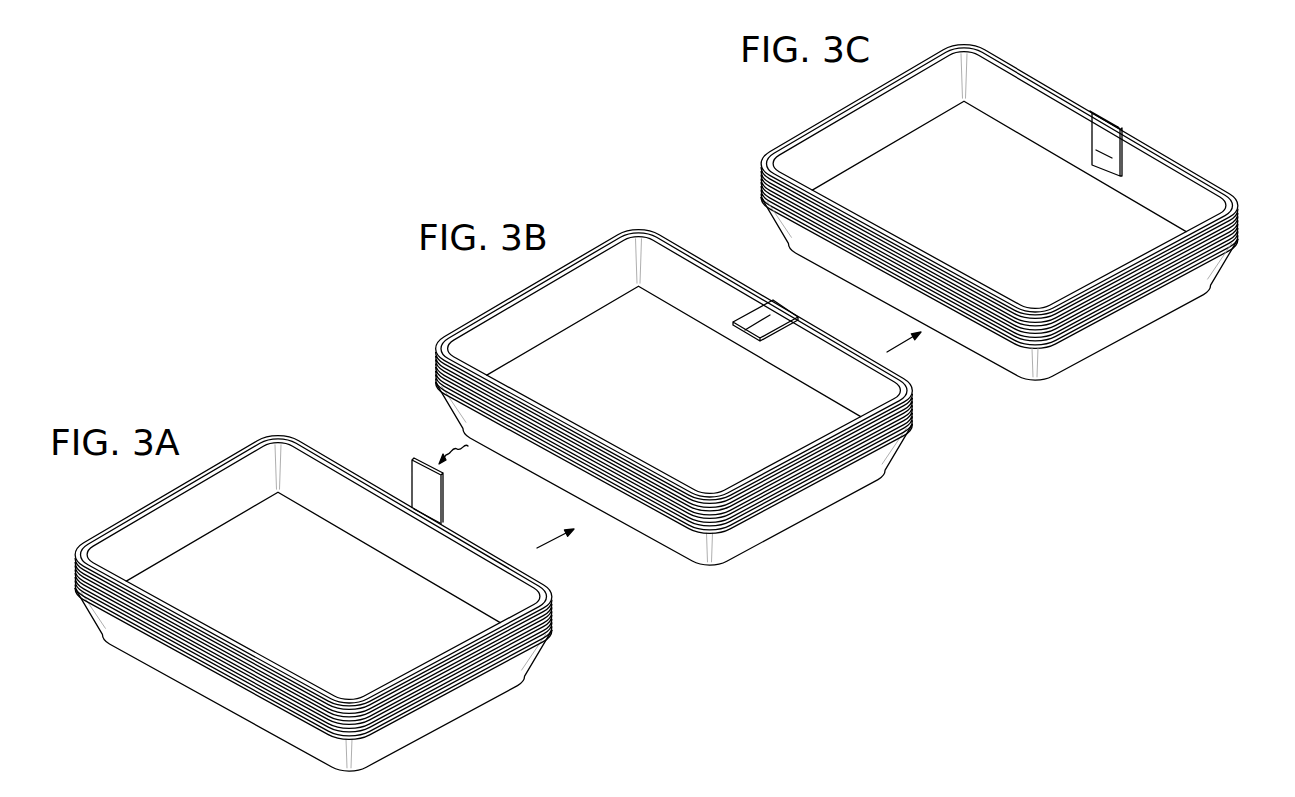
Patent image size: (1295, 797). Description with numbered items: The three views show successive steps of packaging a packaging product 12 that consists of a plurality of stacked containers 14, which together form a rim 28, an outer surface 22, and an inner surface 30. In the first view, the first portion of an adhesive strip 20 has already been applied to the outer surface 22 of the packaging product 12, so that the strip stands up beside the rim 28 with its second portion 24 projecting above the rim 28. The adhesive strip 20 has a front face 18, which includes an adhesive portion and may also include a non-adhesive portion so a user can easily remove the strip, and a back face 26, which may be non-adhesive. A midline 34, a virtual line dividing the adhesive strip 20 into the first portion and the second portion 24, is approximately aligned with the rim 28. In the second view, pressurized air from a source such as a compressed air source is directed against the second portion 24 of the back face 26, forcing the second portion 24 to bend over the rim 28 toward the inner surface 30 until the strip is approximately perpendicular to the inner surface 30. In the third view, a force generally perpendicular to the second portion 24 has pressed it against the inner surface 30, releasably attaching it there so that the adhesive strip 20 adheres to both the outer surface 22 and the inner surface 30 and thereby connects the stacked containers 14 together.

In FIG. 3A, the packaging product 12 is at (553, 577).
In FIG. 3B, the packaging product 12 is at (913, 371).
In FIG. 3C, the packaging product 12 is at (1239, 186).
In FIG. 3A, the container 14 is at (84, 550).
In FIG. 3B, the container 14 is at (446, 343).
In FIG. 3A, the front face 18 is at (416, 501).
In FIG. 3A, the adhesive strip 20 is at (409, 458).
In FIG. 3B, the adhesive strip 20 is at (787, 303).
In FIG. 3C, the adhesive strip 20 is at (1110, 116).
In FIG. 3A, the outer surface 22 is at (204, 692).
In FIG. 3B, the outer surface 22 is at (565, 485).
In FIG. 3C, the outer surface 22 is at (890, 299).
In FIG. 3A, the second portion 24 is at (455, 473).
In FIG. 3B, the back face 26 is at (753, 320).
In FIG. 3C, the back face 26 is at (1102, 147).
In FIG. 3A, the rim 28 is at (213, 468).
In FIG. 3B, the rim 28 is at (574, 262).
In FIG. 3A, the inner surface 30 is at (142, 539).
In FIG. 3B, the inner surface 30 is at (512, 335).
In FIG. 3C, the inner surface 30 is at (862, 132).
In FIG. 3A, the midline 34 is at (428, 522).